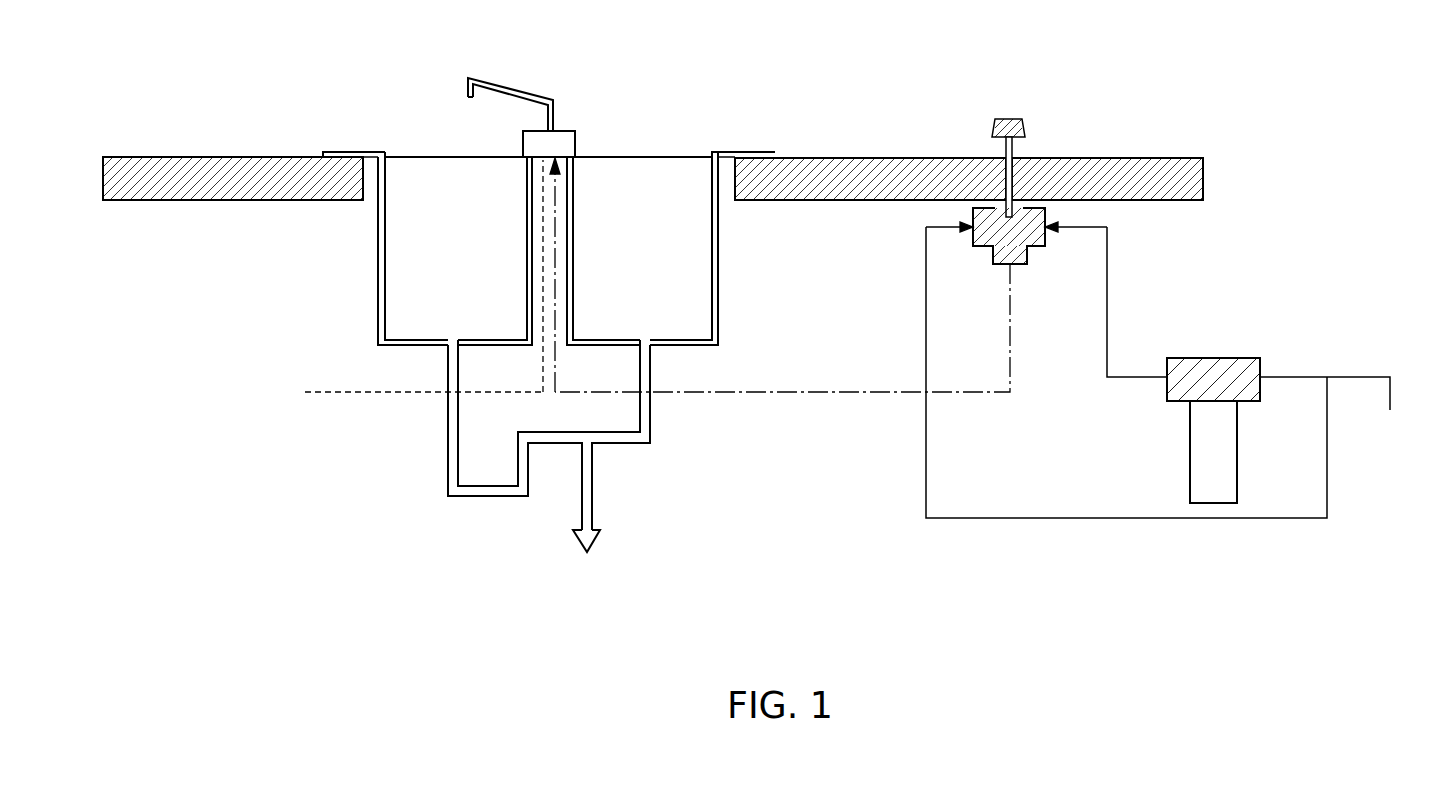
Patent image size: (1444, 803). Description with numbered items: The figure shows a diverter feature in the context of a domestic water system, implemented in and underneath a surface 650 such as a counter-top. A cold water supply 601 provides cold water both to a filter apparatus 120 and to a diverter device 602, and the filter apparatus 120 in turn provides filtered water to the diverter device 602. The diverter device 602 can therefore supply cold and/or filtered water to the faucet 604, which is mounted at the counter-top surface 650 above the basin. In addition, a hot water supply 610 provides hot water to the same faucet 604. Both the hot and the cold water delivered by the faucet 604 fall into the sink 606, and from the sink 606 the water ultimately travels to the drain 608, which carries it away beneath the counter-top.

The surface 650 is at (143, 157).
The faucet 604 is at (555, 142).
The sink 606 is at (378, 290).
The drain 608 is at (620, 567).
The hot water supply 610 is at (270, 438).
The diverter device 602 is at (985, 233).
The filter apparatus 120 is at (1262, 360).
The cold water supply 601 is at (1400, 510).